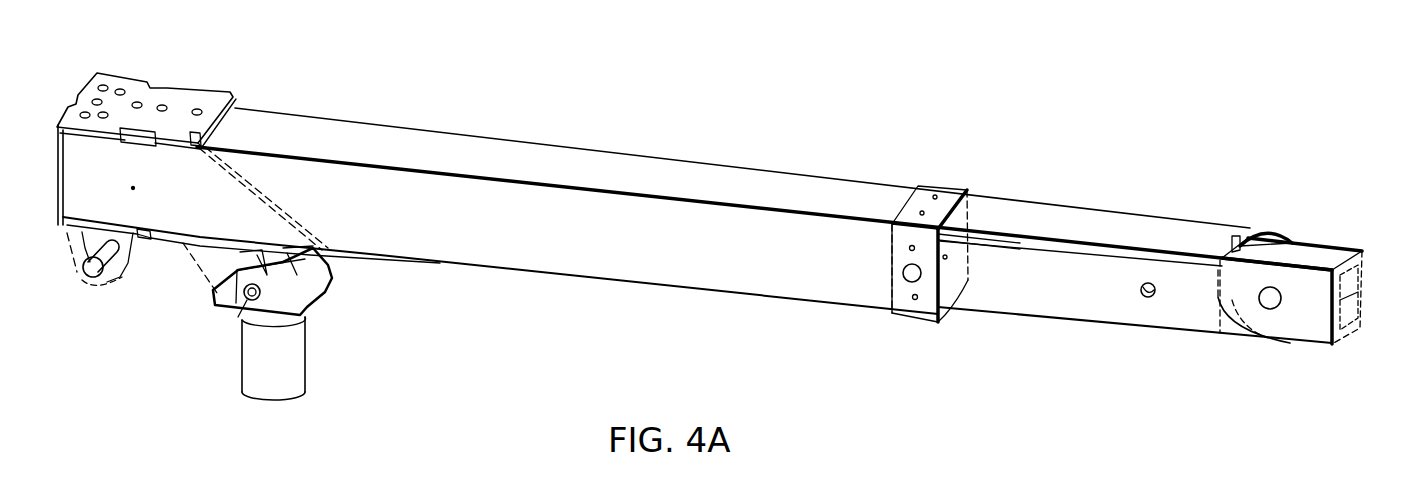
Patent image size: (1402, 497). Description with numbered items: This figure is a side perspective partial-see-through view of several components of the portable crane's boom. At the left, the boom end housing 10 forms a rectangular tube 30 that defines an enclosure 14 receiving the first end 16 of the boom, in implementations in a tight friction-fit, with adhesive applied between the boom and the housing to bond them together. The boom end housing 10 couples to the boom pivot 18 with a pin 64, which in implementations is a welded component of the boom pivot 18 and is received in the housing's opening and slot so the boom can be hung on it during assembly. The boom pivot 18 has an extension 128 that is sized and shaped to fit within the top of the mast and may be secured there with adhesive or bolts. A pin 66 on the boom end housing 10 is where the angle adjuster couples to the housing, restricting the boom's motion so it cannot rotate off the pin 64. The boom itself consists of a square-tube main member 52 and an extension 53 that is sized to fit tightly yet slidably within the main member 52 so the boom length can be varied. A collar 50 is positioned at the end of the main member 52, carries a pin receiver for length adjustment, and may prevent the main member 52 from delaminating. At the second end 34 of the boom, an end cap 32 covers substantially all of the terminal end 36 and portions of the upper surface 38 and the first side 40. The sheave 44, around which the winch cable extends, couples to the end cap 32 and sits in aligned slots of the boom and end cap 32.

The boom end housing 10 is at (215, 88).
The enclosure 14 is at (192, 142).
The first end 16 is at (77, 152).
The boom pivot 18 is at (327, 273).
The rectangular tube 30 is at (115, 73).
The end cap 32 is at (1235, 317).
The second end 34 is at (1262, 343).
The terminal end 36 is at (1363, 252).
The upper surface 38 is at (1205, 232).
The first side 40 is at (1182, 313).
The sheave 44 is at (1283, 232).
The collar 50 is at (931, 186).
The main member 52 is at (640, 282).
The extension 53 is at (1020, 315).
The pin 64 is at (248, 302).
The pin 66 is at (80, 270).
The extension 128 is at (307, 365).